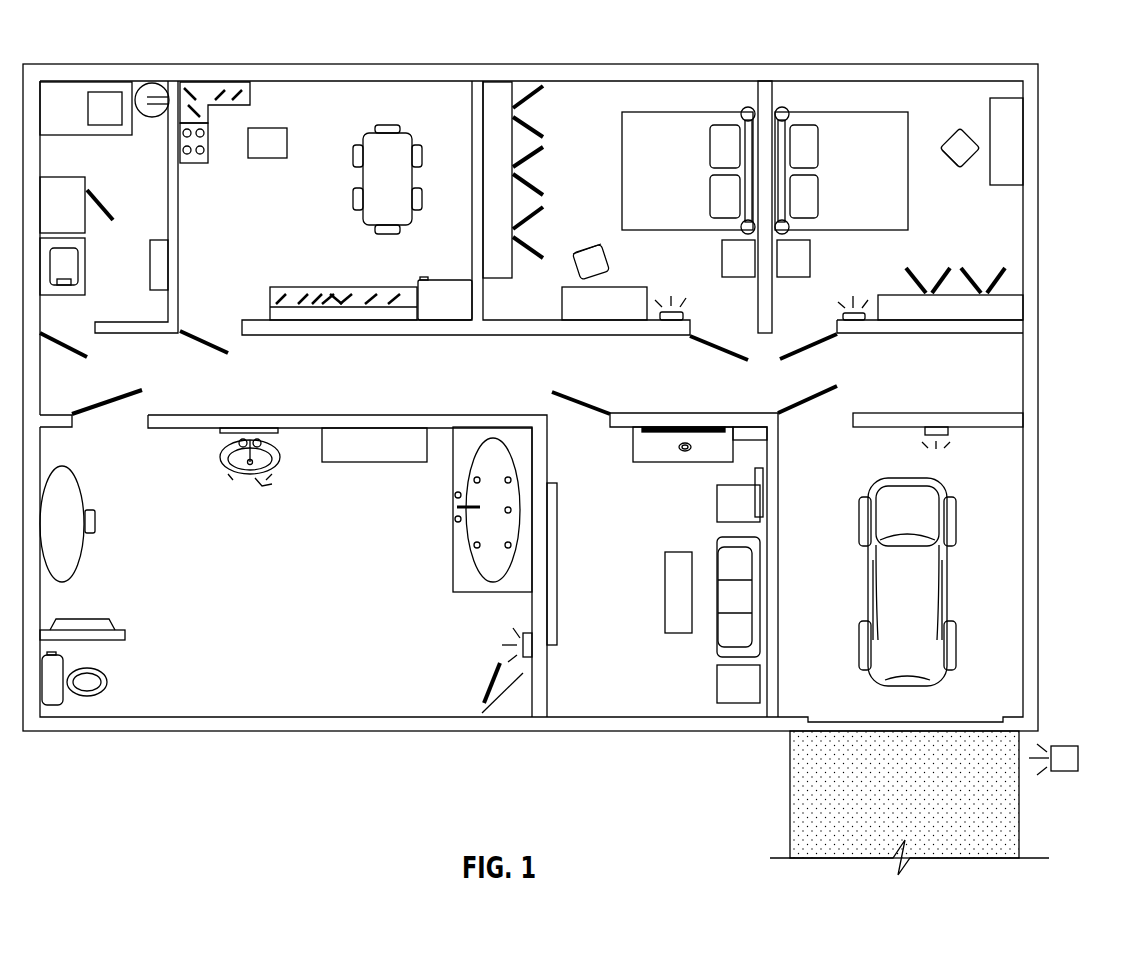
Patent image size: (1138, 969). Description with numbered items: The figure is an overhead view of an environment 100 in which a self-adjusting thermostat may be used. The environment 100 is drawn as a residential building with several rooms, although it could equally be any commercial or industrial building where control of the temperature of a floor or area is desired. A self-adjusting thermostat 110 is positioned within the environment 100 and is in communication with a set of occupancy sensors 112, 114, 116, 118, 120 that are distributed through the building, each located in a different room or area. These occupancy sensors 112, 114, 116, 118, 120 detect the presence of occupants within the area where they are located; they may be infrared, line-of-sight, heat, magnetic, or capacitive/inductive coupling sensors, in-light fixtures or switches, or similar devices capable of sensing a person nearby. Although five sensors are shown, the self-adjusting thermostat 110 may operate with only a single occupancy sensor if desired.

The environment 100 is at (991, 50).
The self-adjusting thermostat 110 is at (757, 503).
The occupancy sensor 112 is at (518, 650).
The occupancy sensor 114 is at (950, 432).
The occupancy sensor 116 is at (676, 310).
The occupancy sensor 118 is at (866, 317).
The occupancy sensor 120 is at (1064, 746).